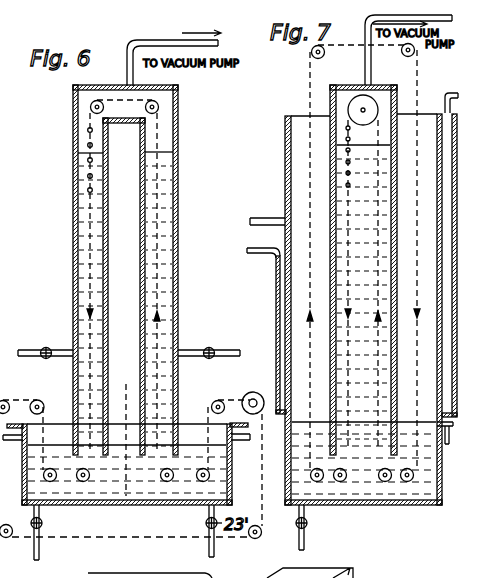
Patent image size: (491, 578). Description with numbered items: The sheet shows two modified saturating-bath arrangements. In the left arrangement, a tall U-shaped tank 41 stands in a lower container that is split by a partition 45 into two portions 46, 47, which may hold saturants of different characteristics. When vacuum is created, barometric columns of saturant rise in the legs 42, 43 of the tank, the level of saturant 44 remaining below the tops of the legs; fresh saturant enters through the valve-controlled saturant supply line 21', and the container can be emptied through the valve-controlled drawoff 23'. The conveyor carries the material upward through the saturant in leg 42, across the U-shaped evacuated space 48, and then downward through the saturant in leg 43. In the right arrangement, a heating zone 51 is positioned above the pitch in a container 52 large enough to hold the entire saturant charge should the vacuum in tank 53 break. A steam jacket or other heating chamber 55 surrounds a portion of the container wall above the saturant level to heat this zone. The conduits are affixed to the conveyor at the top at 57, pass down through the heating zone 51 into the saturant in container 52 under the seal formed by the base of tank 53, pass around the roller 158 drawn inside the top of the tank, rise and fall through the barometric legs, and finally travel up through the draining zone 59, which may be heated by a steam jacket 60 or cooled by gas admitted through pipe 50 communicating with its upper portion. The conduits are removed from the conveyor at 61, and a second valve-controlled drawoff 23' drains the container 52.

In FIG. 6, the level of saturant 44 is at (73, 160).
In FIG. 6, the leg of U-shaped tank 43 is at (76, 292).
In FIG. 6, the leg of U-shaped tank 42 is at (178, 267).
In FIG. 6, the U-shaped tank 41 is at (178, 298).
In FIG. 6, the U-shaped evacuated space 48 is at (161, 119).
In FIG. 6, the valve-controlled saturant supply line 21' is at (42, 339).
In FIG. 6, the partition 45 is at (126, 392).
In FIG. 6, the portion of container 47 is at (97, 490).
In FIG. 6, the portion of container 46 is at (165, 490).
In FIG. 6, the valve-controlled drawoff 23' is at (53, 532).
In FIG. 7, the valve-controlled drawoff 23' is at (319, 527).
In FIG. 7, the conduit removal point 61 is at (310, 70).
In FIG. 7, the conduit attachment point 57 is at (418, 71).
In FIG. 7, the tank 53 is at (335, 99).
In FIG. 7, the roller 158 is at (390, 83).
In FIG. 7, the container 52 is at (416, 504).
In FIG. 7, the heating chamber 55 is at (442, 328).
In FIG. 7, the heating zone 51 is at (415, 264).
In FIG. 7, the pipe 50 is at (251, 222).
In FIG. 7, the steam jacket 60 is at (279, 290).
In FIG. 7, the draining zone 59 is at (296, 308).